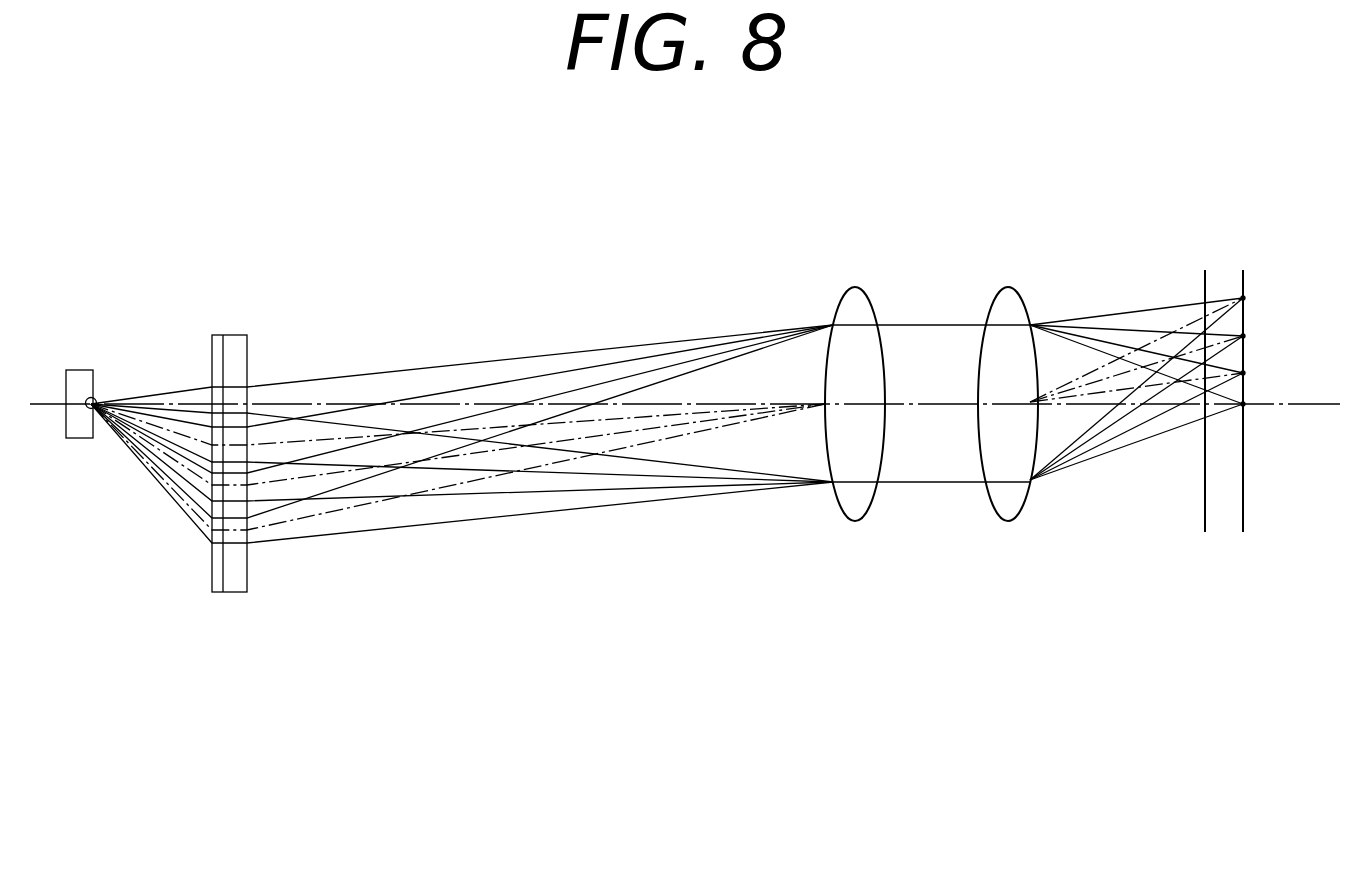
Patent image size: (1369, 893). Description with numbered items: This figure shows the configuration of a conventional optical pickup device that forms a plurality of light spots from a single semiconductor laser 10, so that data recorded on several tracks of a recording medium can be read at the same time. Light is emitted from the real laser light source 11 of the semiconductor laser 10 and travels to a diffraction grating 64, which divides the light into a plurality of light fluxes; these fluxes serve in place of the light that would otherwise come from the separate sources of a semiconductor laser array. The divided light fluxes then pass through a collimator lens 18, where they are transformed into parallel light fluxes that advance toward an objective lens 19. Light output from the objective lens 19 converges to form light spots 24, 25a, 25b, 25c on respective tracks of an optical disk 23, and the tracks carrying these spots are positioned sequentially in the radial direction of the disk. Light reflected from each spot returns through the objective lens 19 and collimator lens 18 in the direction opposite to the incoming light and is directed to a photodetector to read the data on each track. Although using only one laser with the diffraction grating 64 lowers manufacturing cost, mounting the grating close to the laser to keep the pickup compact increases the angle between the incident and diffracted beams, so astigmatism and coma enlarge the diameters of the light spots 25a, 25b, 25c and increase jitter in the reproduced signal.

The semiconductor laser 10 is at (88, 364).
The real laser light source 11 is at (88, 408).
The diffraction grating 64 is at (243, 335).
The collimator lens 18 is at (870, 298).
The objective lens 19 is at (1012, 290).
The optical disk 23 is at (1226, 271).
The light spot 24 is at (1245, 408).
The light spot 25a is at (1245, 373).
The light spot 25b is at (1245, 336).
The light spot 25c is at (1245, 297).